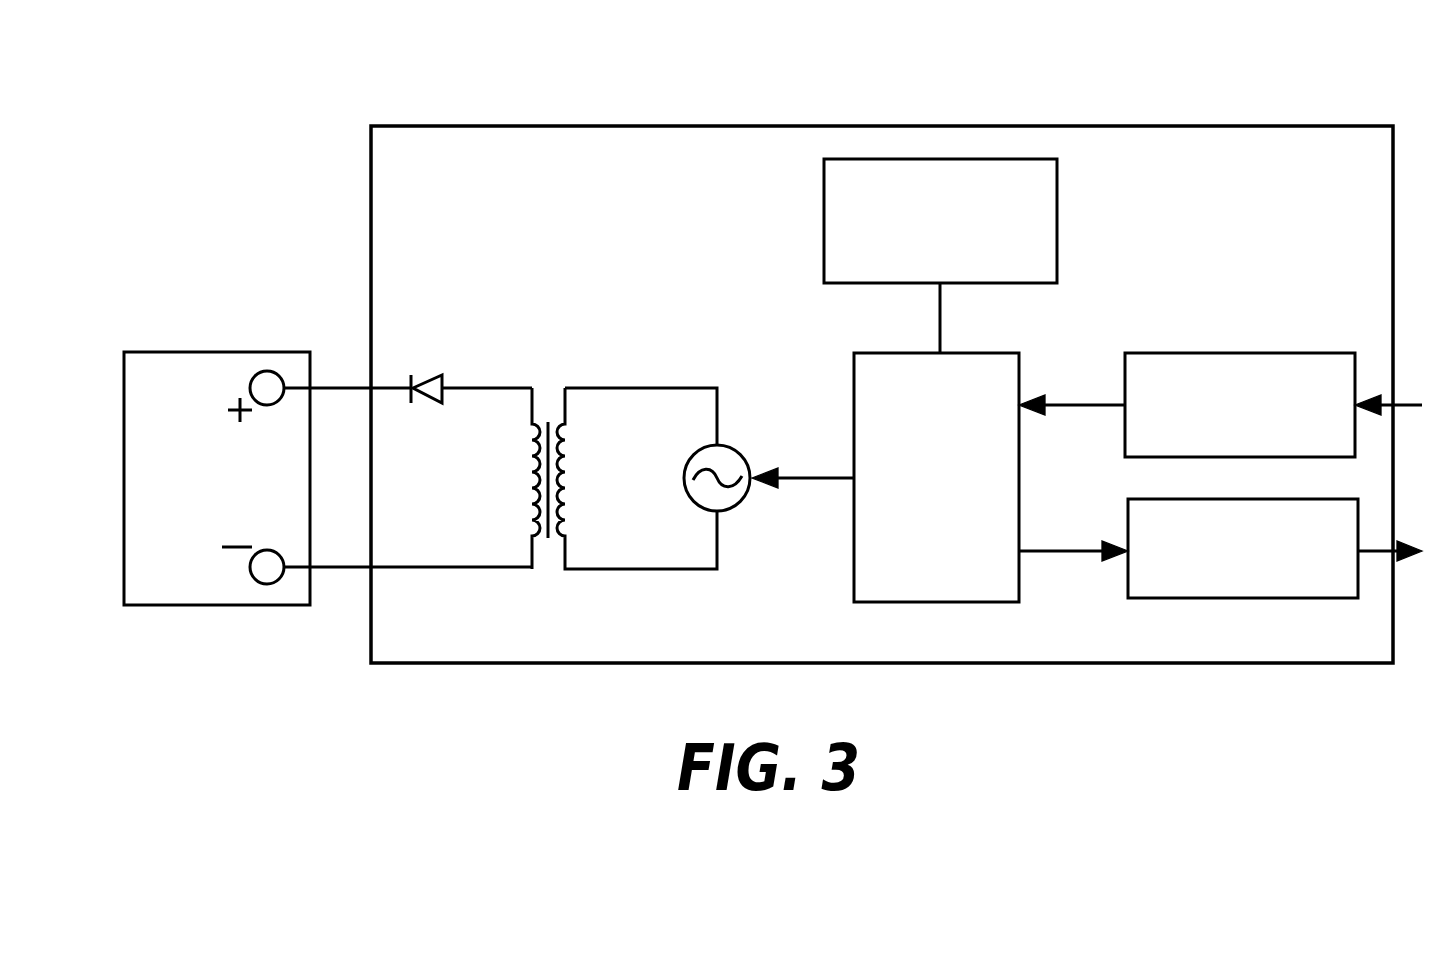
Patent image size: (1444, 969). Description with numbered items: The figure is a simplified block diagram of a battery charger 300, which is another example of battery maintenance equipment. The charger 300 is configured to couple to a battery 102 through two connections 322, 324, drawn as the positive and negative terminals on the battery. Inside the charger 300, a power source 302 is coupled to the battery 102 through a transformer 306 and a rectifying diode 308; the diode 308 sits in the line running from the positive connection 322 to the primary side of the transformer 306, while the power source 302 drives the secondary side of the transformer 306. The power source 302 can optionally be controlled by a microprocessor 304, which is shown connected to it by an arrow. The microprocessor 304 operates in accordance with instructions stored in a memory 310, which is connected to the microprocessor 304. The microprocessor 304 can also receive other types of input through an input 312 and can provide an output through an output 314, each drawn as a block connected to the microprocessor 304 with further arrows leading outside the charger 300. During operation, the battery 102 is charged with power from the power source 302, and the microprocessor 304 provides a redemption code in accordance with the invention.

The battery charger 300 is at (934, 103).
The battery 102 is at (147, 352).
The connection 322 is at (262, 371).
The connection 324 is at (267, 584).
The rectifying diode 308 is at (421, 373).
The transformer 306 is at (552, 386).
The power source 302 is at (724, 509).
The microprocessor 304 is at (936, 602).
The memory 310 is at (1057, 226).
The input 312 is at (1178, 353).
The output 314 is at (1242, 499).